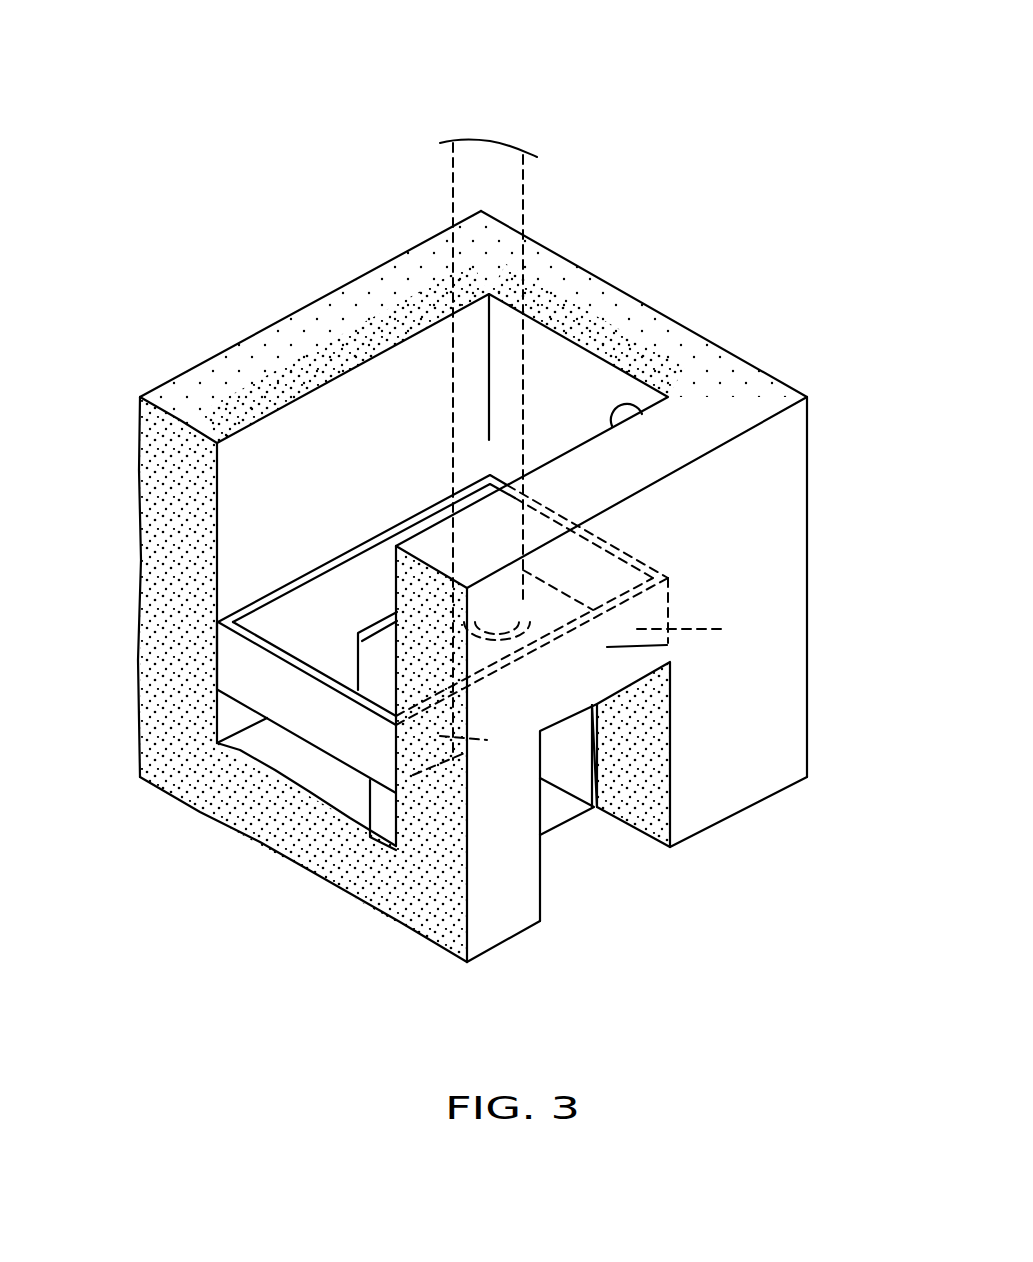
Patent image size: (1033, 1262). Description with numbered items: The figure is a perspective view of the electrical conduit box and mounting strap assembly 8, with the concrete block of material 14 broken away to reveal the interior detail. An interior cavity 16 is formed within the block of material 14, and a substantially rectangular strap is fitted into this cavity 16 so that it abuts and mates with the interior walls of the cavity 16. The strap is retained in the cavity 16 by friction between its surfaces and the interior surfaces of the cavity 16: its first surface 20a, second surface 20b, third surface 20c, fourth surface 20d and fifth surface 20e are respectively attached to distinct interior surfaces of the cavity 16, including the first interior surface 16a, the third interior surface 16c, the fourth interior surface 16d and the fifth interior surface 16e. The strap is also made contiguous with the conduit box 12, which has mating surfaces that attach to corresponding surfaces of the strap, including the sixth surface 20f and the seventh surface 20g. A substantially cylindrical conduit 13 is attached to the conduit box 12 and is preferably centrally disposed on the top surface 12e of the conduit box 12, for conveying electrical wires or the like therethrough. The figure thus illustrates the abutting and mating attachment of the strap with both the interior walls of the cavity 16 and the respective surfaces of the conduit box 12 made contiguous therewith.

The electrical conduit box and mounting strap assembly 8 is at (262, 101).
The conduit box 12 is at (577, 758).
The top surface of the conduit box 12e is at (667, 645).
The conduit 13 is at (450, 180).
The block of material 14 is at (787, 748).
The interior cavity 16 is at (317, 446).
The first interior surface 16a is at (386, 672).
The third interior surface 16c is at (240, 583).
The fourth interior surface 16d is at (538, 423).
The fifth interior surface 16e is at (643, 412).
The first surface 20a is at (488, 743).
The second surface 20b is at (233, 677).
The third surface 20c is at (215, 593).
The fourth surface 20d is at (640, 563).
The fifth surface 20e is at (723, 630).
The sixth surface 20f is at (497, 668).
The seventh surface 20g is at (387, 630).